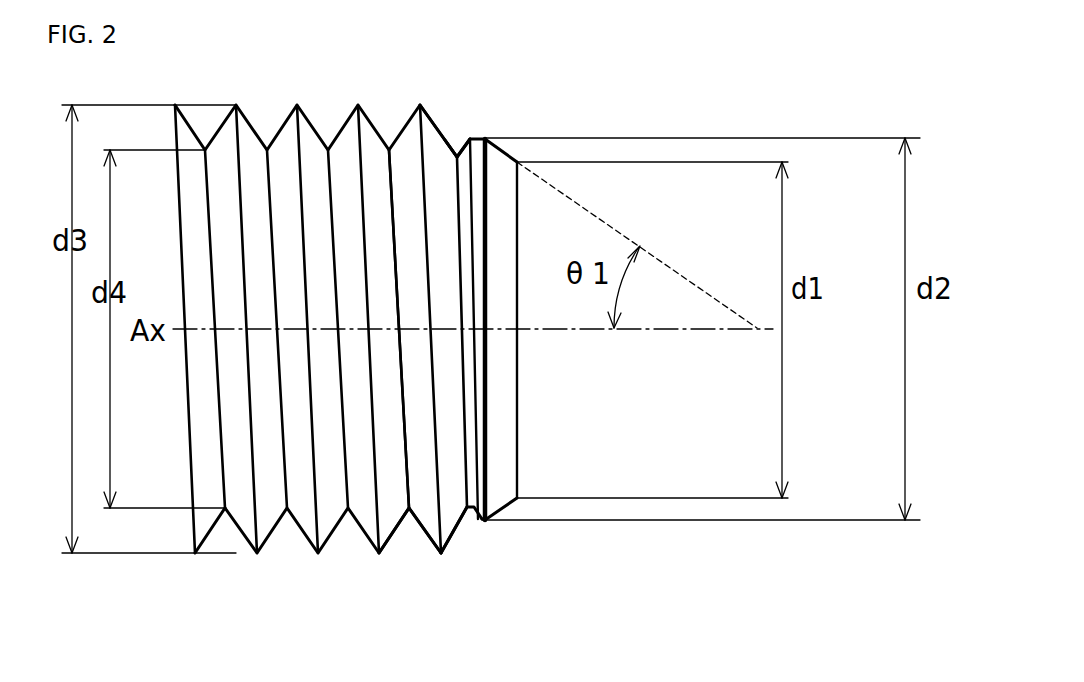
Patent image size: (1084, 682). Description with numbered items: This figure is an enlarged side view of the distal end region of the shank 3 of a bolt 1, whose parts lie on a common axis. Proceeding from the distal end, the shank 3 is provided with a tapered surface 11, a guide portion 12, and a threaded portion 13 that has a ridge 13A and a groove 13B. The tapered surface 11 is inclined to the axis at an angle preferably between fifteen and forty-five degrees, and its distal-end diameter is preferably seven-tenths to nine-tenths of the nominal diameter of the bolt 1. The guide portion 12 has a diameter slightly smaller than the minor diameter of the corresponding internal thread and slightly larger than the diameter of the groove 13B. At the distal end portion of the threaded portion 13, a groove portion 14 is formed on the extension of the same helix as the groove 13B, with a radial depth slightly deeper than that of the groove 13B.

The bolt 1 is at (389, 367).
The shank 3 is at (319, 556).
The tapered surface 11 is at (507, 433).
The guide portion 12 is at (476, 151).
The threaded portion 13 is at (441, 387).
The ridge 13A is at (461, 363).
The groove 13B is at (408, 511).
The groove portion 14 is at (457, 153).